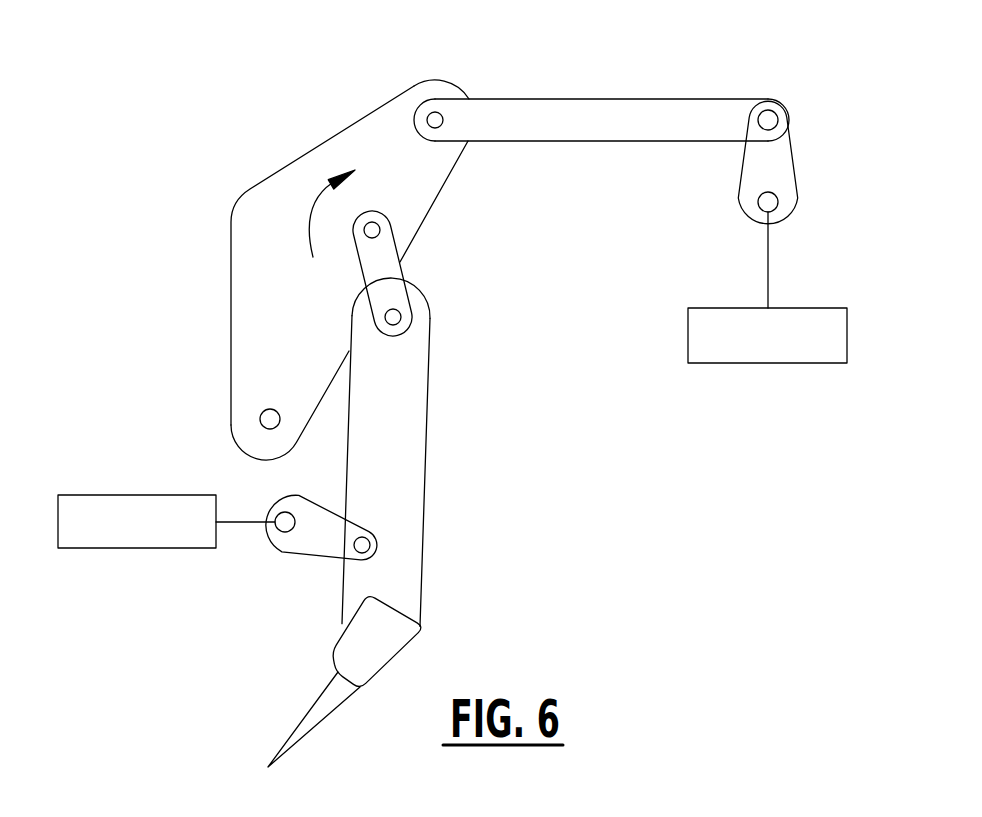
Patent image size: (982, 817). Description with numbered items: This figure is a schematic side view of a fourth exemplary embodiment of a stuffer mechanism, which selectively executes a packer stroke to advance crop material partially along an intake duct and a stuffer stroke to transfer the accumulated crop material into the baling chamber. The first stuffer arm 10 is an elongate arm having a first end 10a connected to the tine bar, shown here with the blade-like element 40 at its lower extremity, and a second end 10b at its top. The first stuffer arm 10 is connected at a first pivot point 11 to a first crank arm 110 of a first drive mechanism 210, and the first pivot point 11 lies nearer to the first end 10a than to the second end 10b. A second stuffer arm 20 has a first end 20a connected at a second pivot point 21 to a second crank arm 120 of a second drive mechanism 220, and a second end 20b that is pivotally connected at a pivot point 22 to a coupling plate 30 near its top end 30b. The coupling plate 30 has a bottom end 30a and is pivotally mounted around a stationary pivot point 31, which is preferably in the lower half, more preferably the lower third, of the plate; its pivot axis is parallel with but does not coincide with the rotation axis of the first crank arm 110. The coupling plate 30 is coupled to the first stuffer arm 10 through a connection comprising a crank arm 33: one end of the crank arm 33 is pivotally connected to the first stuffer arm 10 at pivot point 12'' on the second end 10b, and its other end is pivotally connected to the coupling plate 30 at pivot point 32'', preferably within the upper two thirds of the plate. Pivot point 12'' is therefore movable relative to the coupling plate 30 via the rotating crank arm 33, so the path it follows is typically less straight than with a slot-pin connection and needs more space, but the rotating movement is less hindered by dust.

The first stuffer arm 10 is at (405, 470).
The first end of first stuffer arm 10a is at (450, 598).
The second end of first stuffer arm 10b is at (482, 362).
The first pivot point 11 is at (364, 544).
The pivot point 12'' is at (468, 305).
The second stuffer arm 20 is at (632, 178).
The first end of second stuffer arm 20a is at (722, 148).
The second end of second stuffer arm 20b is at (532, 54).
The second pivot point 21 is at (762, 108).
The pivot point 22 is at (437, 122).
The coupling plate 30 is at (224, 145).
The bottom end of coupling plate 30a is at (190, 425).
The top end of coupling plate 30b is at (345, 65).
The stationary pivot point 31 is at (263, 413).
The pivot point 32'' is at (443, 220).
The crank arm 33 is at (372, 268).
The blade 40 is at (312, 718).
The first crank arm 110 is at (303, 542).
The second crank arm 120 is at (775, 168).
The first drive mechanism 210 is at (107, 548).
The second drive mechanism 220 is at (752, 357).